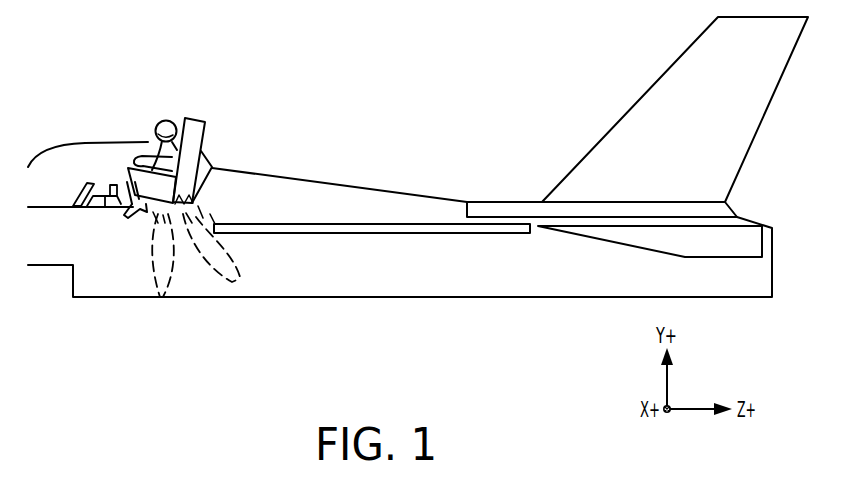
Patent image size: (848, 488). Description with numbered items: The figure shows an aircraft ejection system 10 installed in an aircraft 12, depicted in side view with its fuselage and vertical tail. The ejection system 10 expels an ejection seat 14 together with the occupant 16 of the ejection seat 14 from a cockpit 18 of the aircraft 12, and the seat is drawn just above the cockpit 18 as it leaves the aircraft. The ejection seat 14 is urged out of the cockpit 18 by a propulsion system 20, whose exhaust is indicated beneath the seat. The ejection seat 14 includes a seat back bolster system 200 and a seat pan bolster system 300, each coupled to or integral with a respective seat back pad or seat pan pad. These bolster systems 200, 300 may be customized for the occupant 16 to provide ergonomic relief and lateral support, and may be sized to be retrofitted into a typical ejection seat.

The aircraft ejection system 10 is at (334, 89).
The aircraft 12 is at (432, 274).
The ejection seat 14 is at (201, 132).
The occupant 16 is at (155, 126).
The cockpit 18 is at (62, 189).
The propulsion system 20 is at (156, 253).
The seat back bolster system 200 is at (189, 163).
The seat pan bolster system 300 is at (194, 116).